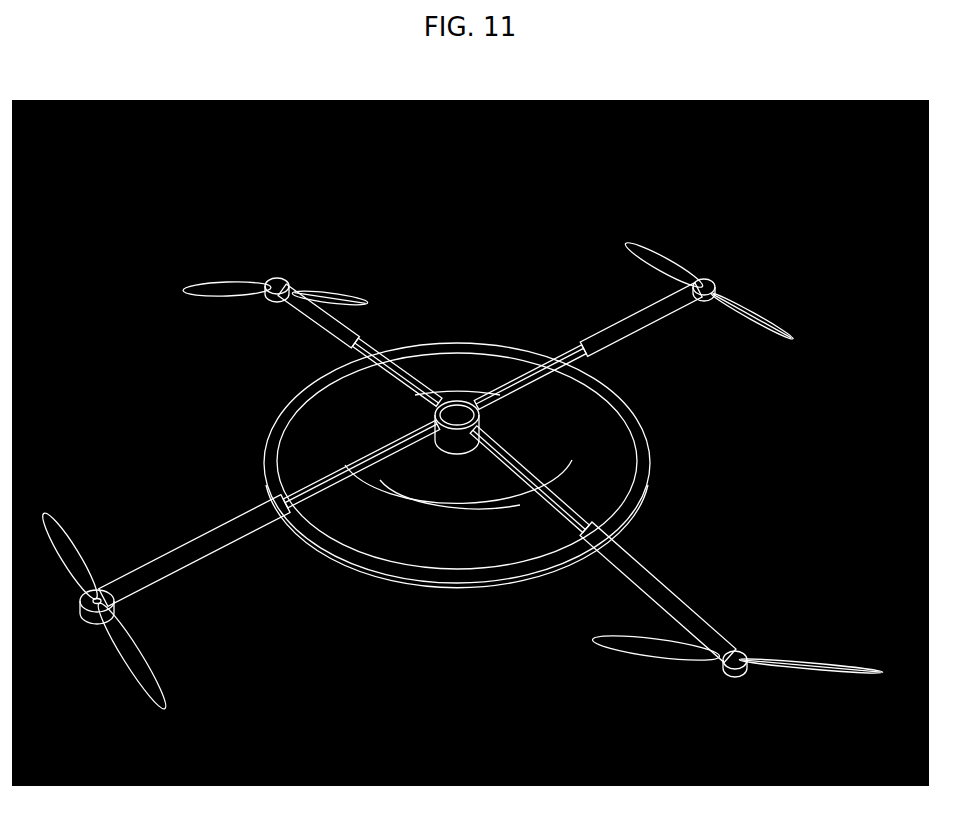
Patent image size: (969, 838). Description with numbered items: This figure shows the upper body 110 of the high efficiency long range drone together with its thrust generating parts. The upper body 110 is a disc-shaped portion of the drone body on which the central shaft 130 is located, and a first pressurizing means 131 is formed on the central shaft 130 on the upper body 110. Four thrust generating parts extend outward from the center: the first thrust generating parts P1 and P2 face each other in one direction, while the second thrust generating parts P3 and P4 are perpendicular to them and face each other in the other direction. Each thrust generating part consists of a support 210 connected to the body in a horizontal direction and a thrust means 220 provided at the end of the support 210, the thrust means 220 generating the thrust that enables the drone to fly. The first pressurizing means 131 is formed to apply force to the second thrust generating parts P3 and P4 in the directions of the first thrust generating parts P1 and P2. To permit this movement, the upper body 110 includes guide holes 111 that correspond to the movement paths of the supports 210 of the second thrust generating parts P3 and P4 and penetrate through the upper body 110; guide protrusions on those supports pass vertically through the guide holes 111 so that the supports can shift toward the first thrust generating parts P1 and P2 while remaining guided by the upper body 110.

The upper body 110 is at (593, 497).
The guide hole 111 is at (470, 505).
The central shaft 130 is at (462, 416).
The first pressurizing means 131 is at (495, 440).
The support 210 is at (352, 352).
The thrust means 220 is at (268, 287).
The first thrust generating part P1 is at (86, 626).
The first thrust generating part P2 is at (718, 270).
The second thrust generating part P3 is at (746, 683).
The second thrust generating part P4 is at (284, 259).